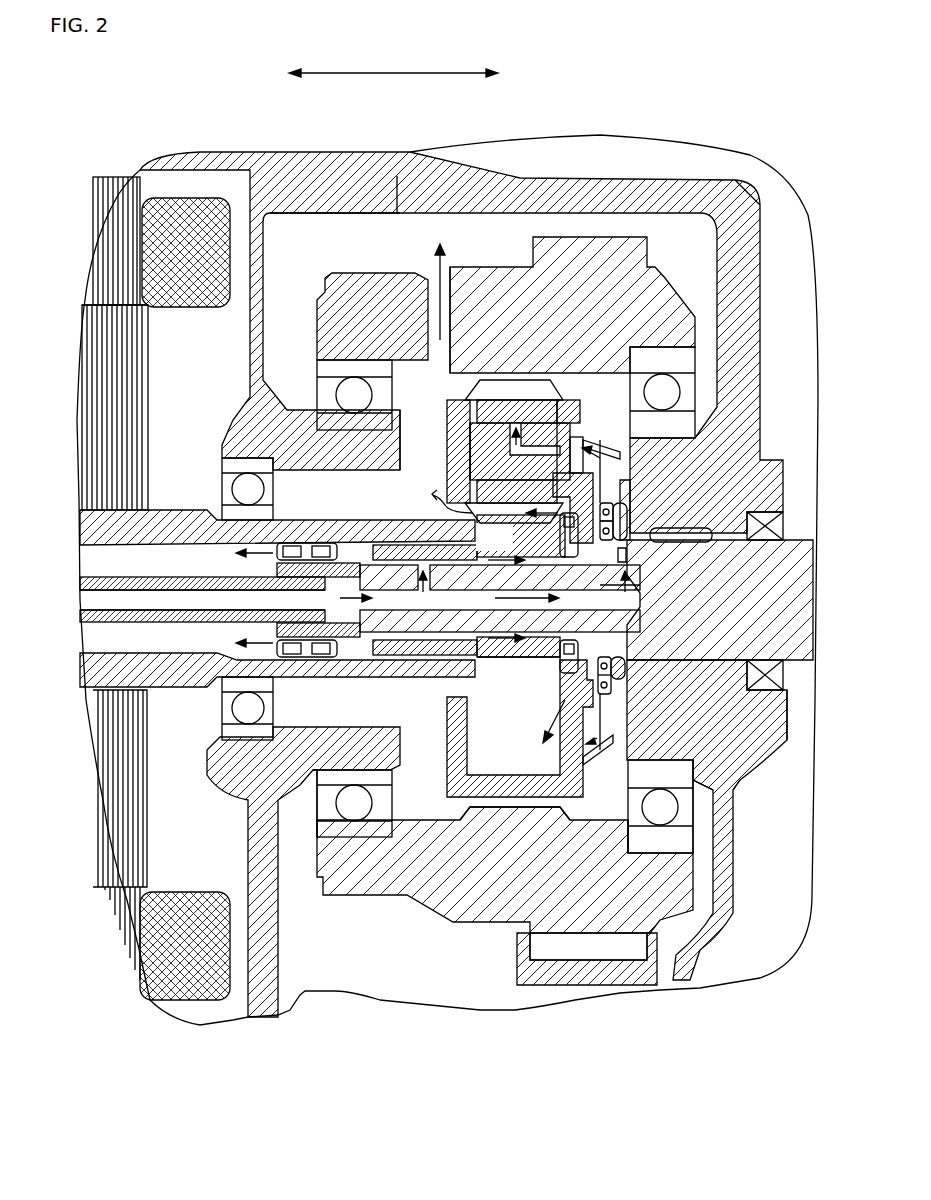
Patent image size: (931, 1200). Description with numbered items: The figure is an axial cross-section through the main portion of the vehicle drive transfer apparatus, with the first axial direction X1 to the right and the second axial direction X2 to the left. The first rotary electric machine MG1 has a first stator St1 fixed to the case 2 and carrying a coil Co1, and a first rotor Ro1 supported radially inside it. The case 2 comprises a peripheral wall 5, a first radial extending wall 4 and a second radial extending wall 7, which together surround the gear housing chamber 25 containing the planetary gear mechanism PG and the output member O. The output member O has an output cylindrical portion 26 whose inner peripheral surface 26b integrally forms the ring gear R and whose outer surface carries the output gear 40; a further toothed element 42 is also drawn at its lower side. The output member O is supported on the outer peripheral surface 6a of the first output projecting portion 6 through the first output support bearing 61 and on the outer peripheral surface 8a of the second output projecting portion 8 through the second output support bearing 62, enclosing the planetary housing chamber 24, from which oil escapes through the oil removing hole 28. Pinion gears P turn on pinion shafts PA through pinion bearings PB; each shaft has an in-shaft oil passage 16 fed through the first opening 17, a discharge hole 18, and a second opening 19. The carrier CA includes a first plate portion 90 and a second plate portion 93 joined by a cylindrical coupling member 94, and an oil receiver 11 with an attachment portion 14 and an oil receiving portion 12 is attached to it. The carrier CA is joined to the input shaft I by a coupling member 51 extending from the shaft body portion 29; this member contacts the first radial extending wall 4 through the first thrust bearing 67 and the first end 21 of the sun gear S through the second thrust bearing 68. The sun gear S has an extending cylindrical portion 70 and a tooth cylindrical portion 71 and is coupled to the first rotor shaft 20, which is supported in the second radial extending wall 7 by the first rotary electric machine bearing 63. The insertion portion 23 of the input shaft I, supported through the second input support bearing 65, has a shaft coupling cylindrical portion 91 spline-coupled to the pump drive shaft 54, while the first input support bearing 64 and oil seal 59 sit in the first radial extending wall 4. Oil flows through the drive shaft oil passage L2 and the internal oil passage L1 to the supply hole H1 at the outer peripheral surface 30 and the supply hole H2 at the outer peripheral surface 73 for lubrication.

The first rotary electric machine MG1 is at (140, 137).
The first stator St1 is at (110, 200).
The coil Co1 is at (196, 200).
The first rotor Ro1 is at (143, 410).
The case 2 is at (747, 192).
The first radial extending wall 4 is at (757, 330).
The peripheral wall 5 is at (418, 185).
The second radial extending wall 7 is at (264, 291).
The planetary gear mechanism PG is at (515, 351).
The output gear 40 is at (575, 245).
The gear housing chamber 25 is at (371, 244).
The oil removing hole 28 is at (432, 296).
The output member O is at (487, 287).
The pinion shafts PA is at (490, 430).
The pinion bearings PB is at (502, 415).
The discharge hole 18 is at (520, 440).
The in-shaft oil passage 16 is at (562, 447).
The carrier CA is at (573, 425).
The ring gear R is at (470, 396).
The planetary housing chamber 24 is at (431, 434).
The first opening 17 is at (580, 448).
The oil receiver 11 is at (622, 437).
The second openings 19 is at (450, 449).
The pinion gears P is at (450, 474).
The first rotary electric machine bearing 63 is at (223, 472).
The first thrust bearing 67 is at (612, 505).
The coupling member 51 is at (592, 528).
The input shaft I is at (716, 542).
The shaft body portion 29 is at (796, 545).
The drive shaft oil passage L2 is at (143, 602).
The supply hole H2 is at (520, 539).
The second thrust bearing 68 is at (626, 556).
The supply hole H1 is at (606, 572).
The pump drive shaft 54 is at (167, 623).
The shaft coupling cylindrical portion 91 is at (276, 628).
The outer peripheral surface 73 is at (563, 636).
The internal oil passage L1 is at (604, 602).
The second input support bearing 65 is at (296, 655).
The insertion portion 23 is at (338, 652).
The extending cylindrical portion 70 is at (433, 657).
The tooth cylindrical portion 71 is at (487, 660).
The first end 21 is at (618, 700).
The second plate portion 93 is at (448, 745).
The first plate portion 90 is at (580, 728).
The sun gear S is at (513, 660).
The first input support bearing 64 is at (753, 770).
The oil seal 59 is at (741, 765).
The outer peripheral surface 30 is at (762, 690).
The first output projecting portion 6 is at (740, 738).
The oil receiving portion 12 is at (622, 778).
The attachment portion 14 is at (585, 828).
The first rotor shaft 20 is at (170, 700).
The second output projecting portion 8 is at (400, 743).
The outer peripheral surface 8a is at (328, 778).
The outer peripheral surface 6a is at (695, 783).
The first output support bearing 61 is at (687, 840).
The cylindrical coupling member 94 is at (513, 787).
The inner peripheral surface 26b is at (597, 823).
The second output support bearing 62 is at (357, 833).
The output cylindrical portion 26 is at (468, 900).
The gear 42 is at (598, 987).
The first axial direction X1 is at (413, 73).
The second axial direction X2 is at (278, 73).